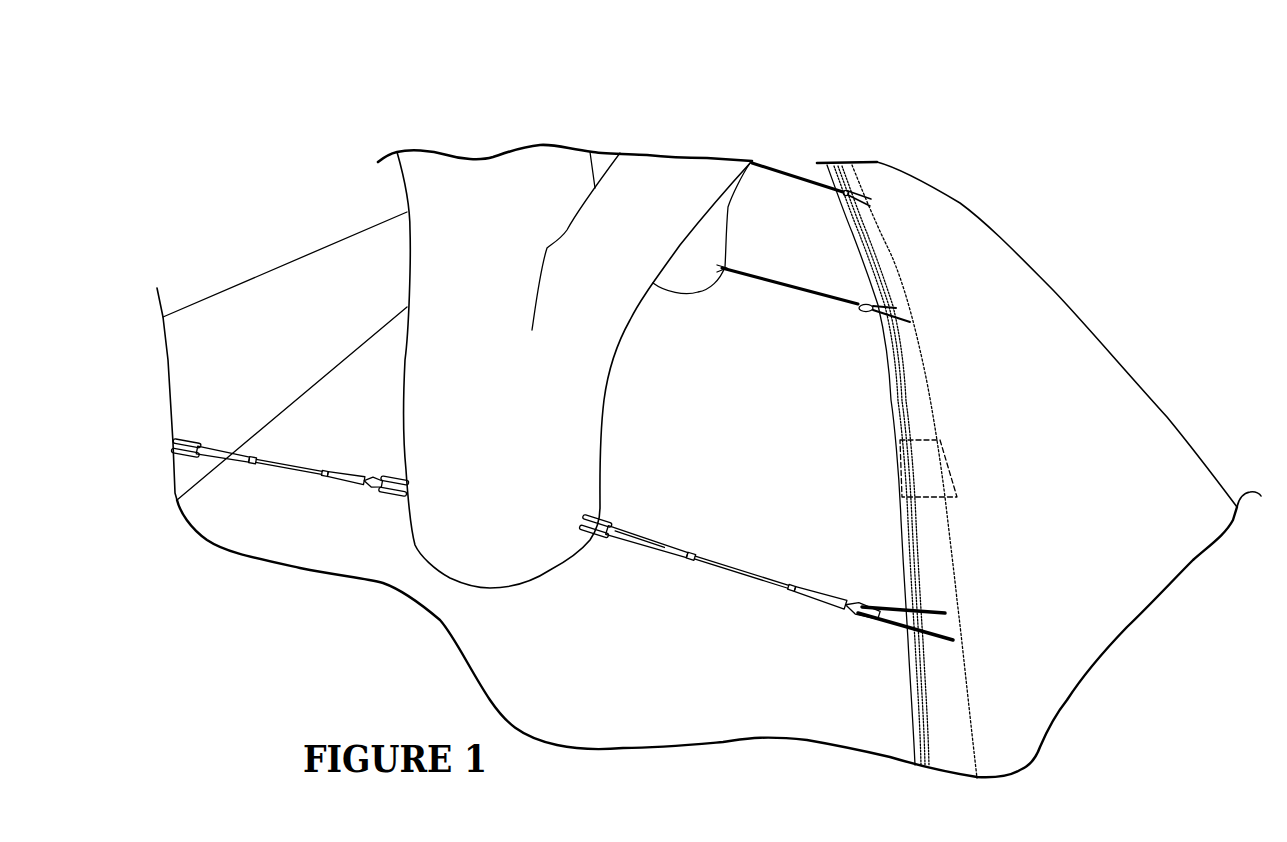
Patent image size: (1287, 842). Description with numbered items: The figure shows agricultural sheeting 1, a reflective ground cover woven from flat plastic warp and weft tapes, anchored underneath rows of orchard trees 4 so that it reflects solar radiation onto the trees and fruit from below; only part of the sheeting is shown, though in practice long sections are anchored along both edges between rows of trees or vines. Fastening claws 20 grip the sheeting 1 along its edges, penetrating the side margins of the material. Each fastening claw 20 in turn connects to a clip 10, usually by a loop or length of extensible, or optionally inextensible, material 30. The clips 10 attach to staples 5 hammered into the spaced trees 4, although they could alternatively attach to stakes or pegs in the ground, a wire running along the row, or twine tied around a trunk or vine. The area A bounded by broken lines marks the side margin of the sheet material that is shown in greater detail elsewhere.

The agricultural sheeting 1 is at (1033, 322).
The side margin area A is at (952, 460).
The orchard trees 4 is at (610, 338).
The staples 5 is at (597, 520).
The clips 10 is at (637, 537).
The fastening claws 20 is at (836, 213).
The extensible material 30 is at (732, 565).